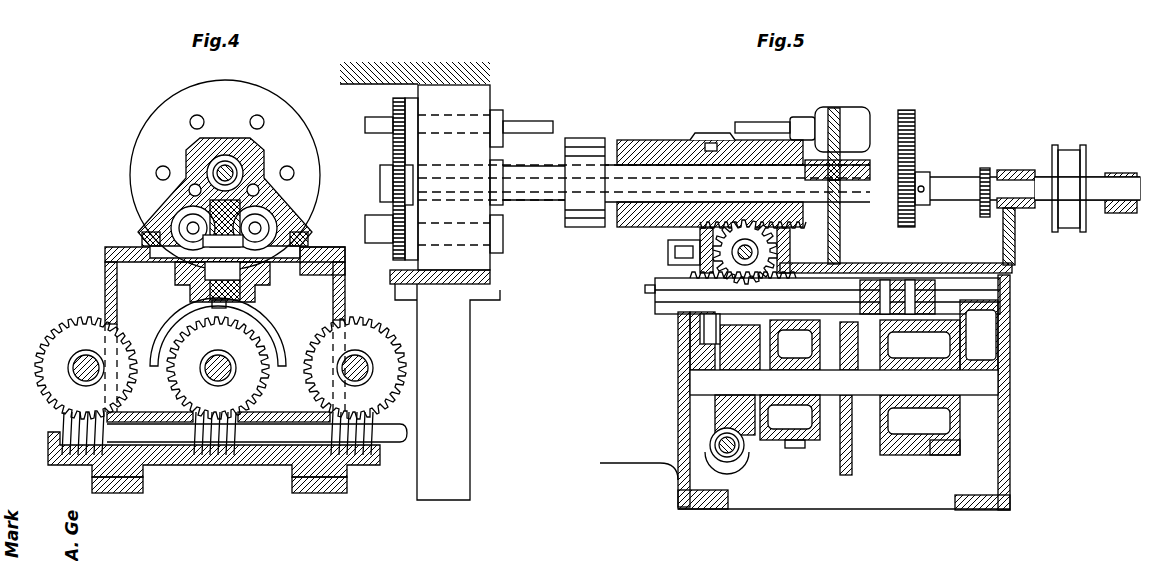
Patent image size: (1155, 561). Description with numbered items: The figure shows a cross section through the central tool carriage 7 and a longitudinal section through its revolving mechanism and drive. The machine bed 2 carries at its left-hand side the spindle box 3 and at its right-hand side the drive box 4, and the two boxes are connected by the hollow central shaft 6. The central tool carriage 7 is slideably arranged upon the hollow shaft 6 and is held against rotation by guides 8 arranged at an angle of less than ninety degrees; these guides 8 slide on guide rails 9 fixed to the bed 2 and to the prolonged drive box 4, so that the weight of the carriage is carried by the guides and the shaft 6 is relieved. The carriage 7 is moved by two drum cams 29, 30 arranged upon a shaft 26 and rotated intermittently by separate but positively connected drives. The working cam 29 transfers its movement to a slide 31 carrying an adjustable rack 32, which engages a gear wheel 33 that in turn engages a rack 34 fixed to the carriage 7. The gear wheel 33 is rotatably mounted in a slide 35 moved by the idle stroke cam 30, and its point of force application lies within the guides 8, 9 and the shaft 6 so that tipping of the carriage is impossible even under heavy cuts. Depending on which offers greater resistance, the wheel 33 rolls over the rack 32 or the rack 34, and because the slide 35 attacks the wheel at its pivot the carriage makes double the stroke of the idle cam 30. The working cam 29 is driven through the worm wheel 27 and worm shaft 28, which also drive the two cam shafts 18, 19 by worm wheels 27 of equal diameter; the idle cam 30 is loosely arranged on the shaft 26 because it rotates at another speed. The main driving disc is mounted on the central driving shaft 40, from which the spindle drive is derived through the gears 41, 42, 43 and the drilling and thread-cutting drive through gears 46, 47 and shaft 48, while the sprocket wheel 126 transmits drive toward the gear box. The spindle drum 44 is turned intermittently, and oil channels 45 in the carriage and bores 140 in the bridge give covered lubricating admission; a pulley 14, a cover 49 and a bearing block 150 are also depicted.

In FIG. 4, the machine bed 2 is at (106, 272).
In FIG. 5, the machine bed 2 is at (471, 374).
In FIG. 5, the spindle box 3 is at (486, 290).
In FIG. 5, the drive box 4 is at (838, 116).
In FIG. 4, the hollow central shaft 6 is at (212, 165).
In FIG. 5, the hollow central shaft 6 is at (546, 186).
In FIG. 4, the central tool carriage 7 is at (266, 152).
In FIG. 5, the central tool carriage 7 is at (592, 226).
In FIG. 4, the guides 8 is at (302, 228).
In FIG. 4, the guide rails 9 is at (312, 258).
In FIG. 5, the guide rails 9 is at (668, 253).
In FIG. 5, the pulley 14 is at (1068, 160).
In FIG. 4, the cam shaft 18 is at (72, 376).
In FIG. 4, the rear cam shaft 19 is at (364, 373).
In FIG. 4, the shaft 26 is at (206, 378).
In FIG. 5, the shaft 26 is at (692, 378).
In FIG. 4, the worm wheel 27 is at (53, 345).
In FIG. 5, the worm wheel 27 is at (718, 424).
In FIG. 4, the worm shaft 28 is at (206, 466).
In FIG. 5, the worm shaft 28 is at (731, 451).
In FIG. 4, the working cam 29 is at (266, 332).
In FIG. 5, the working cam 29 is at (782, 443).
In FIG. 5, the idle stroke cam 30 is at (905, 446).
In FIG. 4, the slide 31 is at (205, 305).
In FIG. 5, the slide 31 is at (666, 301).
In FIG. 4, the adjustable rack 32 is at (262, 294).
In FIG. 5, the adjustable rack 32 is at (700, 320).
In FIG. 4, the gear wheel 33 is at (210, 225).
In FIG. 5, the gear wheel 33 is at (722, 246).
In FIG. 5, the rack 34 is at (737, 183).
In FIG. 4, the slide 35 is at (196, 281).
In FIG. 5, the slide 35 is at (901, 285).
In FIG. 5, the central driving shaft 40 is at (940, 188).
In FIG. 5, the gear 41 is at (394, 195).
In FIG. 5, the gear 42 is at (396, 258).
In FIG. 5, the gear 43 is at (394, 104).
In FIG. 5, the spindle drum 44 is at (484, 93).
In FIG. 5, the oil channel 45 is at (706, 140).
In FIG. 5, the gear 46 is at (916, 173).
In FIG. 5, the gear 47 is at (913, 119).
In FIG. 5, the shaft 48 is at (751, 128).
In FIG. 4, the cover plate 49 is at (122, 250).
In FIG. 5, the sprocket wheel 126 is at (986, 168).
In FIG. 4, the oil channel bores 140 is at (259, 191).
In FIG. 5, the bearing block 150 is at (700, 330).